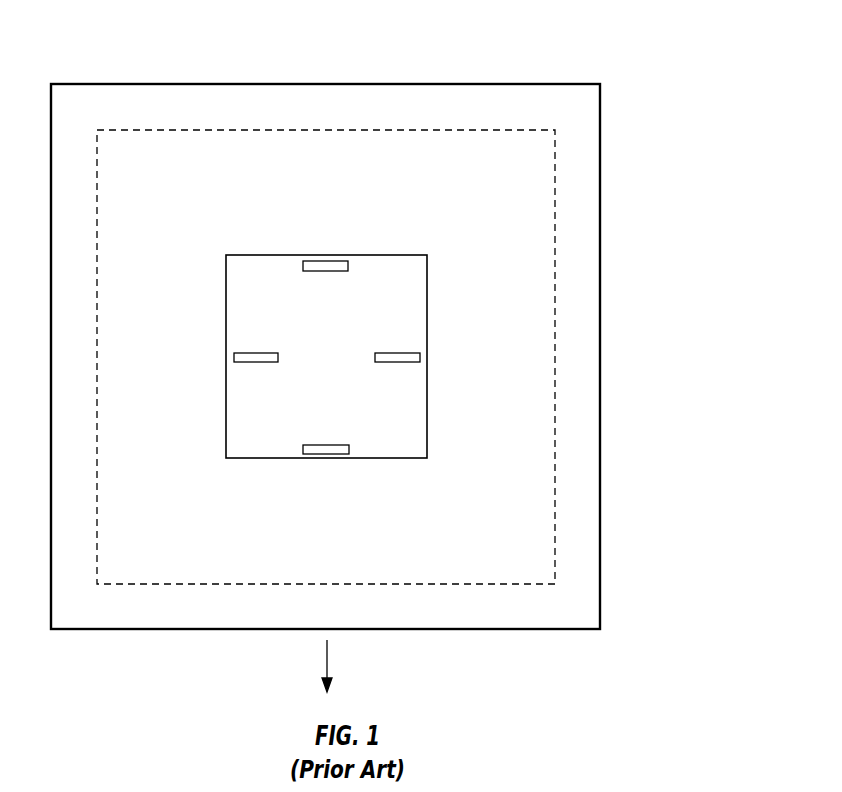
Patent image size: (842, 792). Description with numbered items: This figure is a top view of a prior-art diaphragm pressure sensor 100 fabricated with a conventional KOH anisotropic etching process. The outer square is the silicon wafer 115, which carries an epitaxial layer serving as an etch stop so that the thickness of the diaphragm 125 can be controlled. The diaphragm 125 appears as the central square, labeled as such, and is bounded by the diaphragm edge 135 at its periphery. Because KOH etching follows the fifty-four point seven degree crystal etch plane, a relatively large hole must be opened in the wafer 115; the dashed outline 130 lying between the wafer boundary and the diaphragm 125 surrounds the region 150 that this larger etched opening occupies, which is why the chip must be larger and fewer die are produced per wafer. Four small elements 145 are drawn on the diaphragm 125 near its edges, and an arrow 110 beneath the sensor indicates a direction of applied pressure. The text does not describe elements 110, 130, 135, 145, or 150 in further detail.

The diaphragm pressure sensor 100 is at (600, 40).
The pressure direction arrow 110 is at (327, 668).
The wafer 115 is at (397, 84).
The diaphragm 125 is at (347, 412).
The cavity boundary 130 is at (323, 583).
The diaphragm edge 135 is at (426, 255).
The piezoresistive elements 145 is at (318, 261).
The cavity region 150 is at (535, 488).